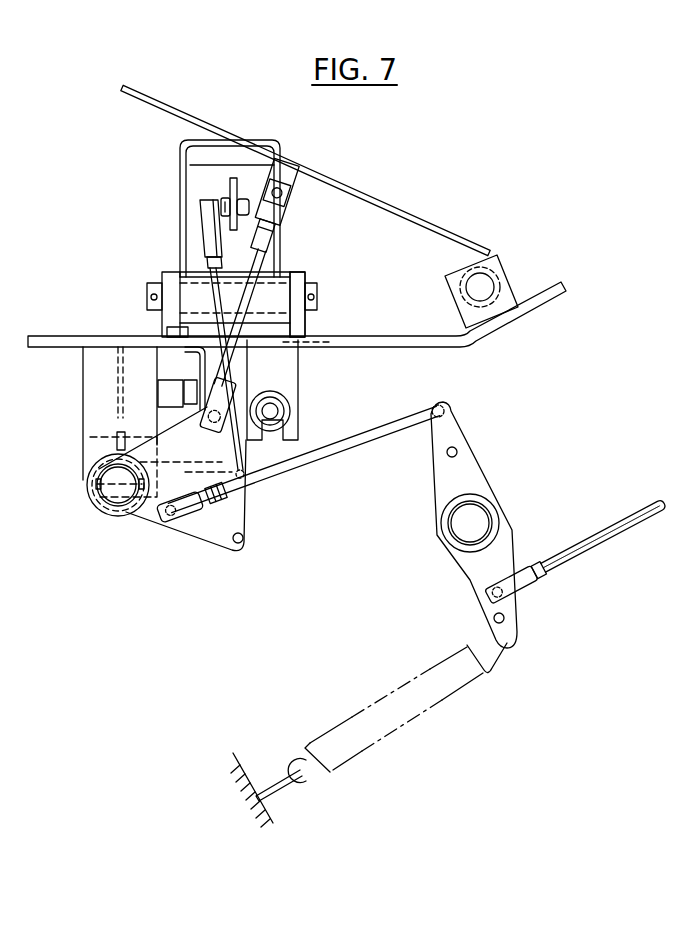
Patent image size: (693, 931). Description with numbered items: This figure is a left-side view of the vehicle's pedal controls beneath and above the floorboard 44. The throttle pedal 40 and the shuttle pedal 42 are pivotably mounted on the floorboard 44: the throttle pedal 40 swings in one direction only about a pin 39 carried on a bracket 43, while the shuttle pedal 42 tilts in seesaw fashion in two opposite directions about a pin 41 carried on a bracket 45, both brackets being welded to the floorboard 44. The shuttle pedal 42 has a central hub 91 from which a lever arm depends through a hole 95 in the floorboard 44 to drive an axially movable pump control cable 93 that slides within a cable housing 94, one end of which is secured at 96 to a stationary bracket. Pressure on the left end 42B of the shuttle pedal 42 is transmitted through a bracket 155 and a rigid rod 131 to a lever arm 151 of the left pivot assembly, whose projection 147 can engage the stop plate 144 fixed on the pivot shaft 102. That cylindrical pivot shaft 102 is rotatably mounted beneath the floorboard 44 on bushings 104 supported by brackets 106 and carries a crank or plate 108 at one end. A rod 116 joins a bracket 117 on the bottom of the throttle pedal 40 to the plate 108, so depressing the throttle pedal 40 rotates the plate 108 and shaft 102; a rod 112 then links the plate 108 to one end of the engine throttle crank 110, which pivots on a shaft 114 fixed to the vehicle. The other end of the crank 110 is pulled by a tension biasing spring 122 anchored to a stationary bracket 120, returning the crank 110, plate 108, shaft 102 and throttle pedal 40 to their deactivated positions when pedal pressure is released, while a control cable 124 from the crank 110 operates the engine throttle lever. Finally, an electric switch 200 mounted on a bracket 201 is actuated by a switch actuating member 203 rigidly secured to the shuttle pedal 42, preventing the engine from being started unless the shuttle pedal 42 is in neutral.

The throttle pedal 40 is at (151, 97).
The shuttle pedal 42 is at (285, 124).
The left end of shuttle pedal 42B is at (182, 140).
The bracket 155 is at (230, 184).
The rigid rod 131 is at (203, 217).
The bracket 117 is at (292, 190).
The rod 116 is at (264, 250).
The central hub 91 is at (185, 290).
The bracket 45 is at (302, 278).
The pin 41 is at (318, 290).
The hole 95 is at (311, 338).
The floorboard 44 is at (399, 335).
The bracket 43 is at (497, 262).
The pin 39 is at (482, 285).
The bracket 106 is at (84, 405).
The projection 147 is at (90, 437).
The bracket 201 is at (204, 373).
The electric switch 200 is at (178, 407).
The stop member or plate 144 is at (148, 458).
The switch actuating member 203 is at (234, 386).
The cable housing end securement 96 is at (286, 398).
The cable housing 94 is at (285, 408).
The pump control cable 93 is at (279, 412).
The lever arm 151 is at (242, 460).
The rod 112 is at (347, 452).
The pivot shaft 102 is at (115, 483).
The bushing 104 is at (134, 513).
The crank or plate 108 is at (192, 537).
The engine throttle crank 110 is at (474, 460).
The shaft 114 is at (479, 521).
The control cable 124 is at (603, 540).
The biasing spring 122 is at (335, 728).
The bracket 120 is at (283, 790).